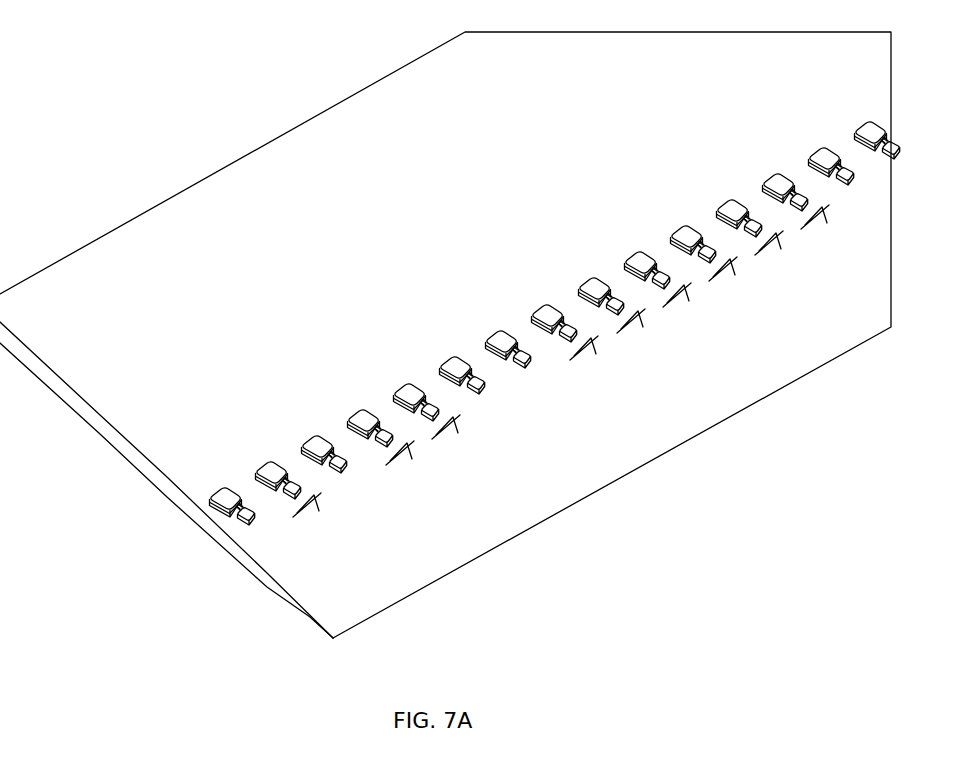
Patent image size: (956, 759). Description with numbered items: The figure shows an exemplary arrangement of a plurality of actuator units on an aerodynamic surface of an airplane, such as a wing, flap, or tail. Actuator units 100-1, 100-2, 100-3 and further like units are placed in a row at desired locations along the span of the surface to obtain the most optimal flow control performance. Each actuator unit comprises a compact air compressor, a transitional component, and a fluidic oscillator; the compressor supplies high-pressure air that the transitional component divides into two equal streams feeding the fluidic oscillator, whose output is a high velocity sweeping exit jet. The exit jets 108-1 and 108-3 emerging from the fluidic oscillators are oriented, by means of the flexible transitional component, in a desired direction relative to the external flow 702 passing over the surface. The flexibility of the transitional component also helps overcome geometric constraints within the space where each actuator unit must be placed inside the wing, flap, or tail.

The external flow 702 is at (247, 147).
The actuator unit 100-1 is at (222, 490).
The actuator unit 100-2 is at (267, 464).
The actuator unit 100-3 is at (316, 436).
The exit jet 108-1 is at (318, 511).
The exit jet 108-3 is at (409, 459).